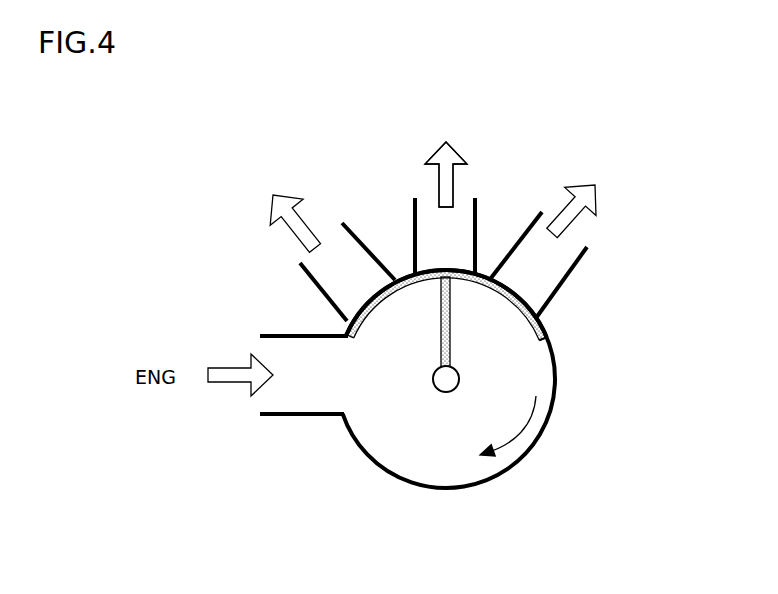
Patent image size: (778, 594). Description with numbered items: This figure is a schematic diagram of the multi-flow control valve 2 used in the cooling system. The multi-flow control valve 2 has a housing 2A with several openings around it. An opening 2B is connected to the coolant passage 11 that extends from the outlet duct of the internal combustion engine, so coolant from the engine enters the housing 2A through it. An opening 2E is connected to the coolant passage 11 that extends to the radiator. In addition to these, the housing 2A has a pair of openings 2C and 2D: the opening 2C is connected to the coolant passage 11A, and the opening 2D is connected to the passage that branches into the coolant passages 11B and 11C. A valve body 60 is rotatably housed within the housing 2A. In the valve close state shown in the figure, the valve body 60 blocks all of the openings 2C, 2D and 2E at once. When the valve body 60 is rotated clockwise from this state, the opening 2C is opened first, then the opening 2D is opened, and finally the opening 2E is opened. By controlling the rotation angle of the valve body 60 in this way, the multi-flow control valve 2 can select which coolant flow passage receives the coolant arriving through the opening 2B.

The multi-flow control valve 2 is at (450, 373).
The housing 2A is at (457, 489).
The opening 2B is at (333, 383).
The opening 2C is at (356, 293).
The opening 2D is at (442, 255).
The opening 2E is at (530, 283).
The valve body 60 is at (536, 333).
The coolant passage 11 is at (263, 459).
The coolant passage 11A is at (269, 211).
The coolant passage 11B is at (426, 161).
The coolant passage 11C is at (449, 161).